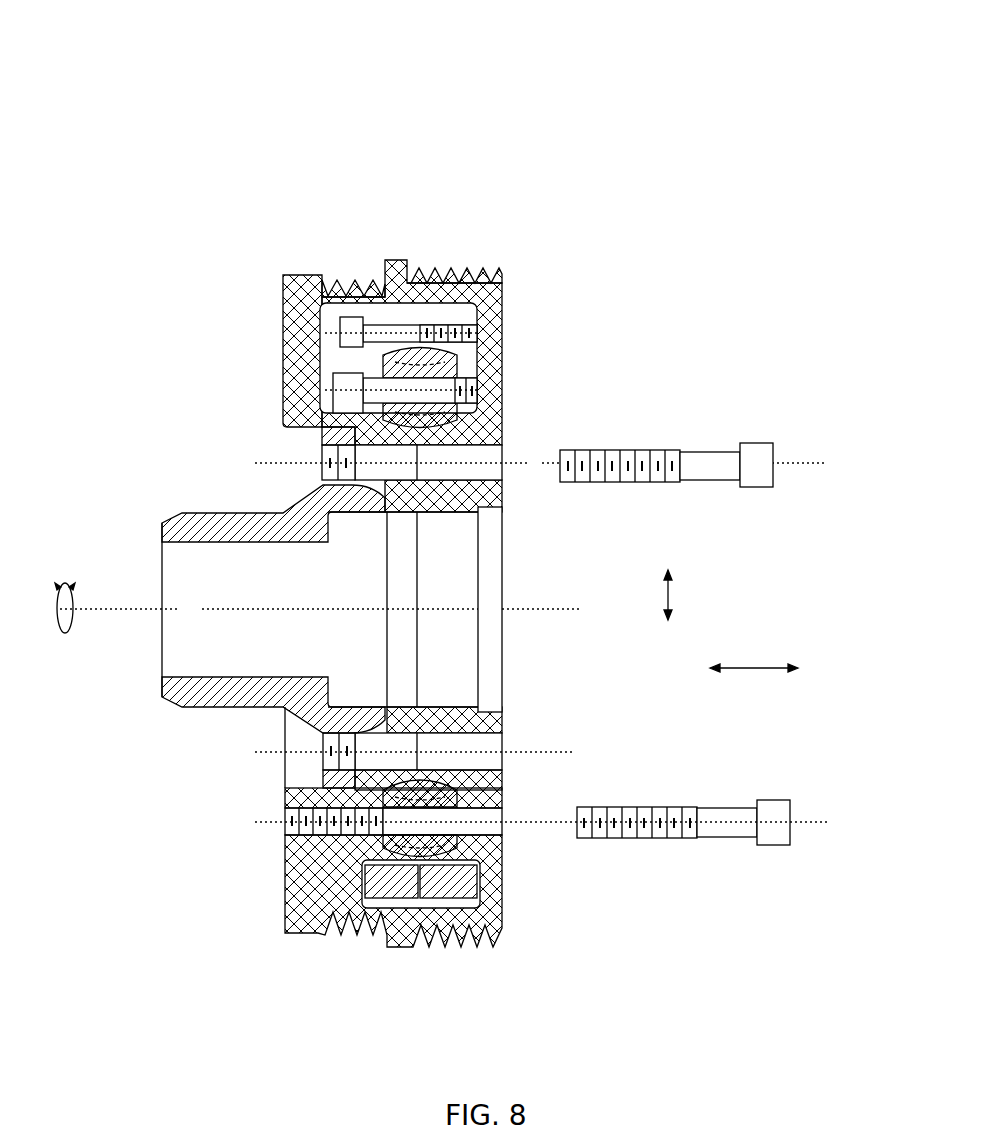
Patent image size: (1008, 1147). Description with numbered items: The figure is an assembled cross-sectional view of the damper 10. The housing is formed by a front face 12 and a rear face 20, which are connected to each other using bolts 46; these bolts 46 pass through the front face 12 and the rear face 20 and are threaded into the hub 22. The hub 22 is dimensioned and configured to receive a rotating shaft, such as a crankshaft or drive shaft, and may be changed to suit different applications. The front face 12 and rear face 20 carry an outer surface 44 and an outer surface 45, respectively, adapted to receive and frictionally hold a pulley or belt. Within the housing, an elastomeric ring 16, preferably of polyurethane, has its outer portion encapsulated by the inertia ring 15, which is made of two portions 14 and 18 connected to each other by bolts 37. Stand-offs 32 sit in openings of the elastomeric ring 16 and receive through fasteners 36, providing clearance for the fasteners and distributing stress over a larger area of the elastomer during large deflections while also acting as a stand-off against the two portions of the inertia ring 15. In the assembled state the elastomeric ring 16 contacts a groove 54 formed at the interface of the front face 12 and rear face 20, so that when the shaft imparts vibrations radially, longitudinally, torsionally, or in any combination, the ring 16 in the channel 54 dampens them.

The damper 10 is at (493, 29).
The front face 12 is at (502, 282).
The portion of inertia ring 14 is at (490, 863).
The inertia ring 15 is at (443, 887).
The elastomeric ring 16 is at (480, 348).
The portion of inertia ring 18 is at (392, 887).
The rear face 20 is at (283, 283).
The hub 22 is at (168, 522).
The stand-offs 32 is at (455, 790).
The fasteners 36 is at (340, 398).
The bolts 37 is at (340, 338).
The outer surface 44 is at (440, 262).
The outer surface 45 is at (350, 287).
The fasteners 46 is at (757, 487).
The groove 54 is at (455, 775).